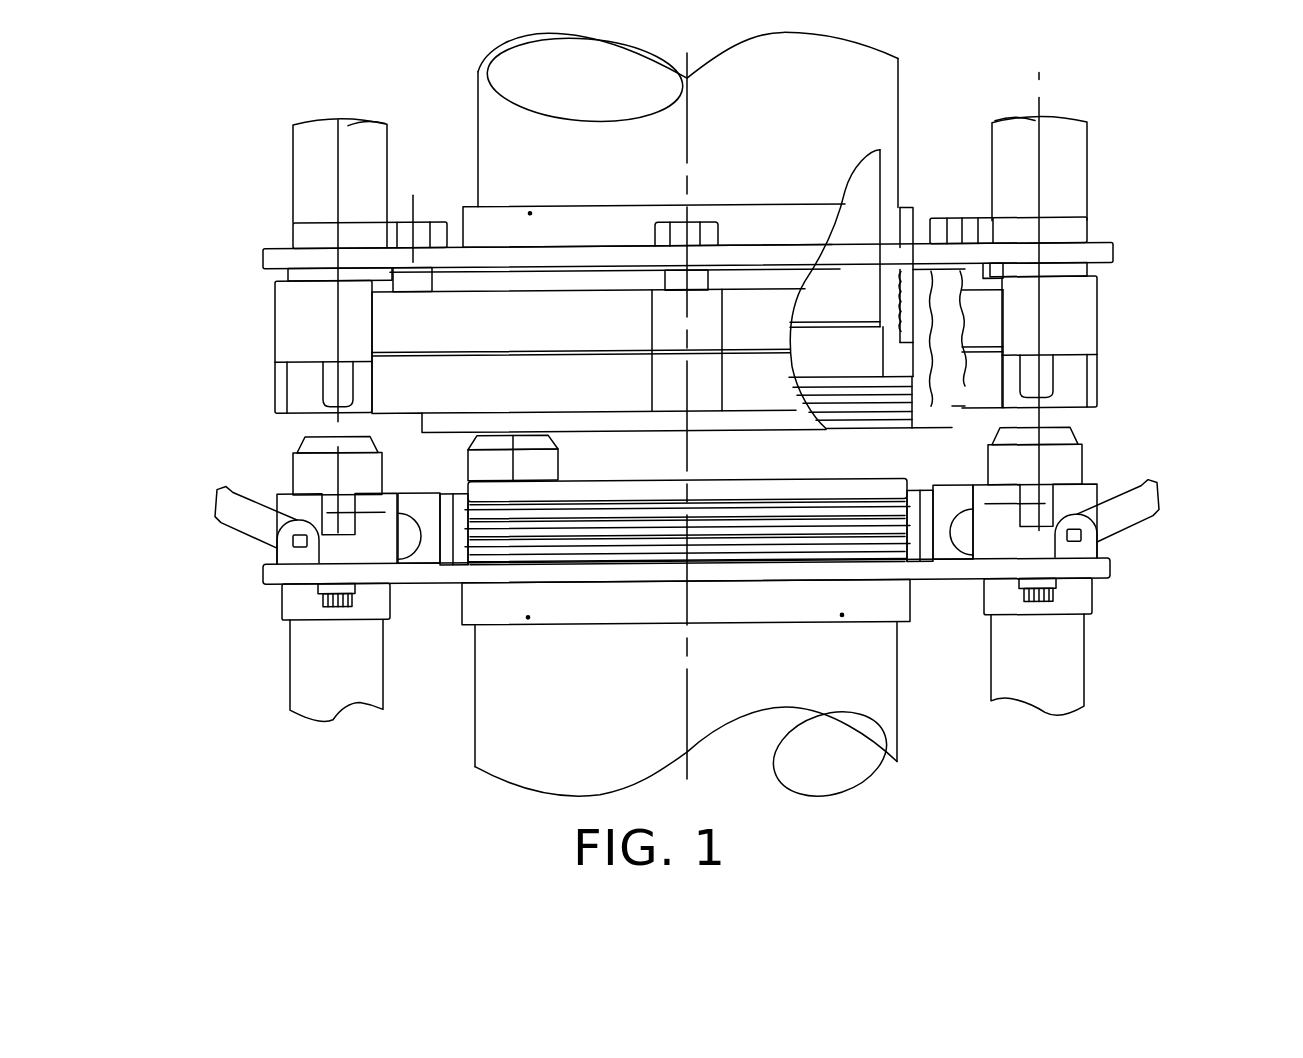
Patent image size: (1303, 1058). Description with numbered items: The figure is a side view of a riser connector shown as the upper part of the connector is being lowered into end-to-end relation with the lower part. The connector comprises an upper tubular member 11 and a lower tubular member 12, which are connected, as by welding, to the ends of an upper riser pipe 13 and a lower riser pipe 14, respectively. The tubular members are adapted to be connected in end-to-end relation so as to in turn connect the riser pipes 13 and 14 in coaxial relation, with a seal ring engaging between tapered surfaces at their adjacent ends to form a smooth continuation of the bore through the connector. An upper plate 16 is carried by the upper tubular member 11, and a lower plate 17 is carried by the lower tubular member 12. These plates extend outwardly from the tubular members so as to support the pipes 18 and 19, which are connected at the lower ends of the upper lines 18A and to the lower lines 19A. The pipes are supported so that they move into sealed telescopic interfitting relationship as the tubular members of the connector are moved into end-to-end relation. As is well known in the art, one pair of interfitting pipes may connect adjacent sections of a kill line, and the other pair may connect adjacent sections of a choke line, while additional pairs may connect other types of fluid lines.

The upper tubular member 11 is at (912, 234).
The lower tubular member 12 is at (823, 596).
The upper riser pipe 13 is at (515, 166).
The lower riser pipe 14 is at (822, 664).
The upper plate 16 is at (263, 257).
The lower plate 17 is at (1097, 569).
The pipe 18 is at (287, 320).
The upper line 18A is at (1078, 209).
The pipe 19 is at (290, 602).
The lower line 19A is at (1072, 653).